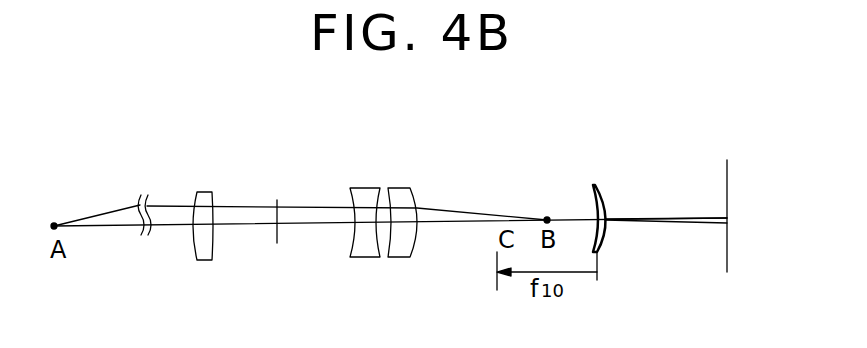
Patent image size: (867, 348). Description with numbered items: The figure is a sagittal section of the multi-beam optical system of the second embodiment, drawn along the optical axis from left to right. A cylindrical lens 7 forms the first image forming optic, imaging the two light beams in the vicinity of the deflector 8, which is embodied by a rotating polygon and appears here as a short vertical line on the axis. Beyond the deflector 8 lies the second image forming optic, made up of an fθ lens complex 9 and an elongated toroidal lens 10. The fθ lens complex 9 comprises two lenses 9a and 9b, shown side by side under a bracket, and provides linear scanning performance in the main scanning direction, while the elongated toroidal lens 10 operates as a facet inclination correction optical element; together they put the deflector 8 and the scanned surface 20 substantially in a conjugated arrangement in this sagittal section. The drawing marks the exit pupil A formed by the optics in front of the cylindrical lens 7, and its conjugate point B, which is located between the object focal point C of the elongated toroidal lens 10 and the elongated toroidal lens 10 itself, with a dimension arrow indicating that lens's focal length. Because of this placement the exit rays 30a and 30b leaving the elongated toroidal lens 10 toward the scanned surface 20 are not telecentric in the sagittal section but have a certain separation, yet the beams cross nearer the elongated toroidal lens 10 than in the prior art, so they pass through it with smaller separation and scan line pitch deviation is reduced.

The cylindrical lens 7 is at (207, 190).
The deflector 8 is at (277, 200).
The fθ lens complex 9 is at (382, 183).
The lens 9a is at (360, 204).
The lens 9b is at (406, 204).
The elongated toroidal lens 10 is at (593, 188).
The scanned surface 20 is at (728, 199).
The exit ray 30a is at (685, 217).
The exit ray 30b is at (702, 225).